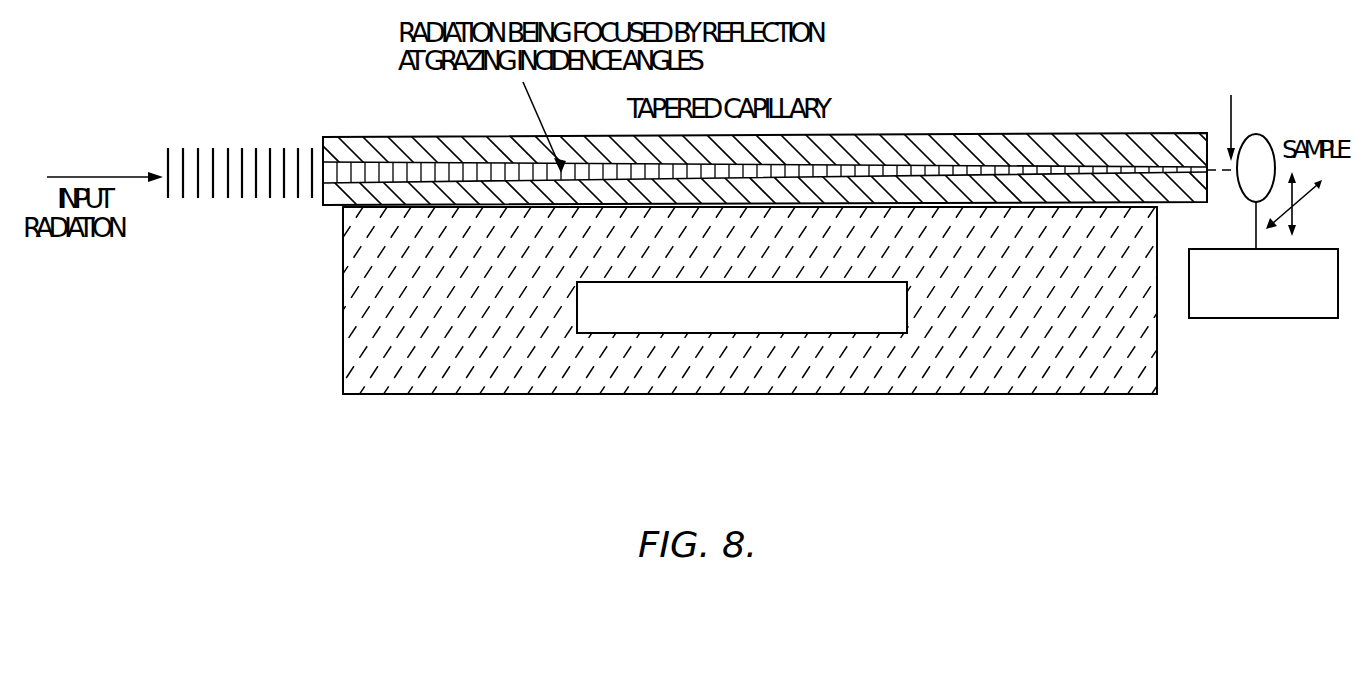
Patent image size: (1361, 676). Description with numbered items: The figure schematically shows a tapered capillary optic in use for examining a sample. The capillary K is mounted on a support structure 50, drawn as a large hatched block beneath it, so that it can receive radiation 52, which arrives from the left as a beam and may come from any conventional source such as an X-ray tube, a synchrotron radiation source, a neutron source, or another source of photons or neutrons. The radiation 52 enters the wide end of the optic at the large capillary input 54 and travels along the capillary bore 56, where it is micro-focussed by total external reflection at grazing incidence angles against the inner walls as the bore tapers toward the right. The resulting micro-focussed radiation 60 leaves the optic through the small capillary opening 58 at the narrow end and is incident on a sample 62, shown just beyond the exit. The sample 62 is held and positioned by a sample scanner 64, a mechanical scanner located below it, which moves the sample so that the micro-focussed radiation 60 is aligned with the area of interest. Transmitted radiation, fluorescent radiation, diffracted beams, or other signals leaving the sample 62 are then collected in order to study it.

The support structure 50 is at (498, 366).
The radiation 52 is at (257, 143).
The large capillary input 54 is at (323, 186).
The capillary bore 56 is at (436, 168).
The small capillary opening 58 is at (1218, 133).
The micro-focussed radiation 60 is at (1263, 101).
The sample 62 is at (1265, 140).
The sample scanner 64 is at (1320, 248).
The capillary K is at (1038, 122).